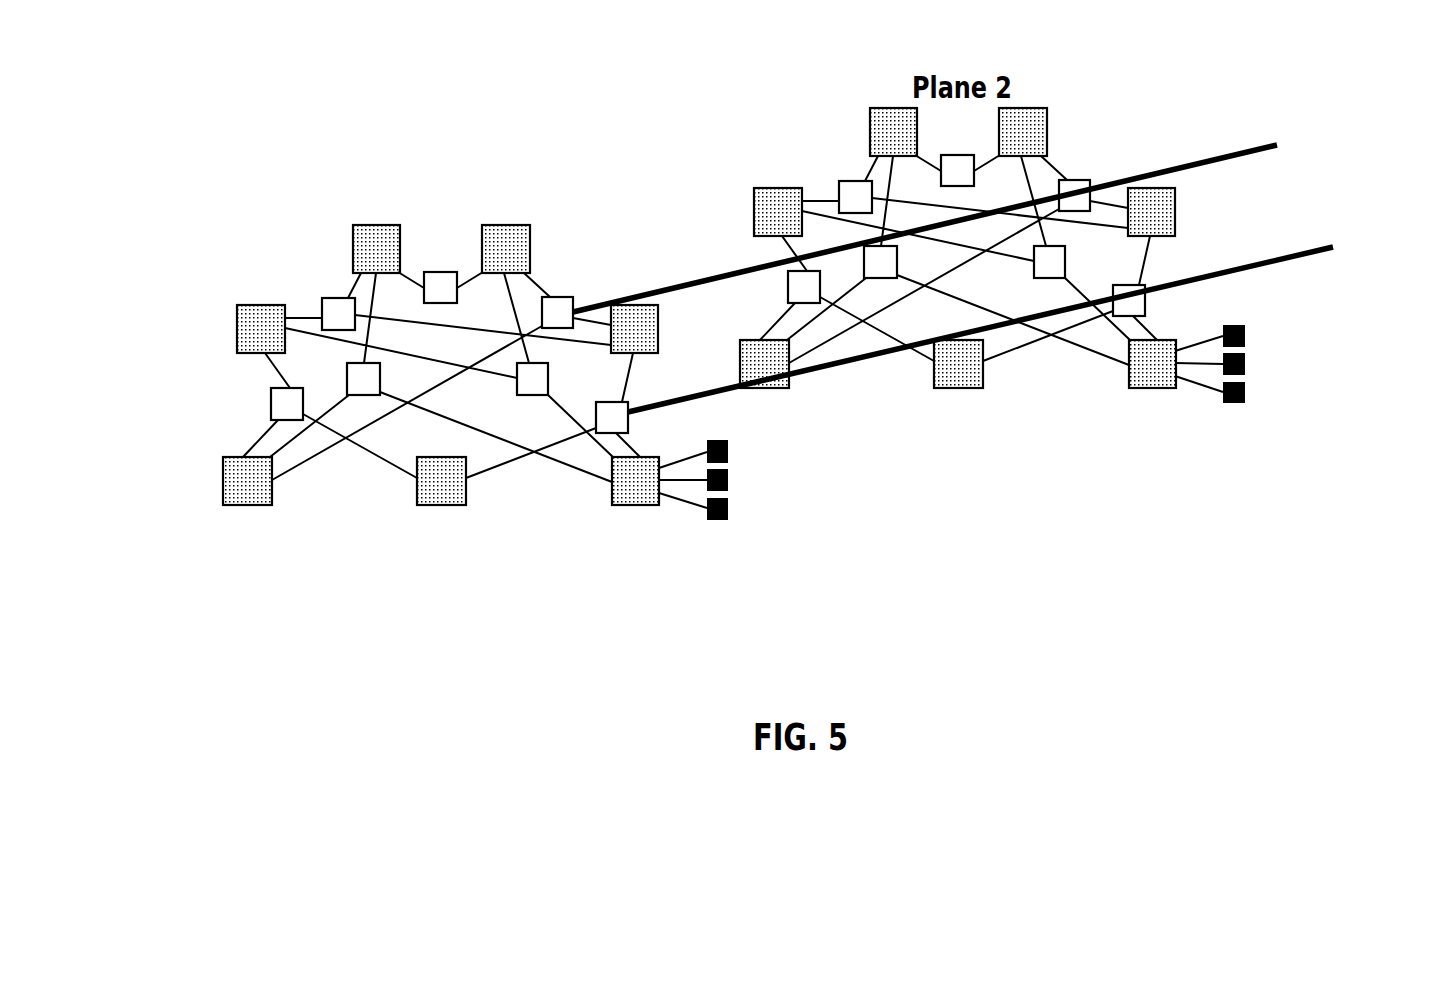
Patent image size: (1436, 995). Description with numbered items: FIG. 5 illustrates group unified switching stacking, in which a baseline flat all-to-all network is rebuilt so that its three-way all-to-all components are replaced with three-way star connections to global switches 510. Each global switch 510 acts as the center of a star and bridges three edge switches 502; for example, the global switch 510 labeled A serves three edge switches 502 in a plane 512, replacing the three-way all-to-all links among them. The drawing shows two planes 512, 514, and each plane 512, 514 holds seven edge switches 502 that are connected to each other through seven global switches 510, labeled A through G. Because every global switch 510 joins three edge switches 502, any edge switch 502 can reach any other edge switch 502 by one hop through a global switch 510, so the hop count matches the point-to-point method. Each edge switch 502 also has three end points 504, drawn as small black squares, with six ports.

The edge switch 502 is at (262, 305).
The end point 504 is at (729, 510).
The global switch 510 is at (610, 402).
The plane 512 is at (214, 392).
The plane 514 is at (1298, 187).